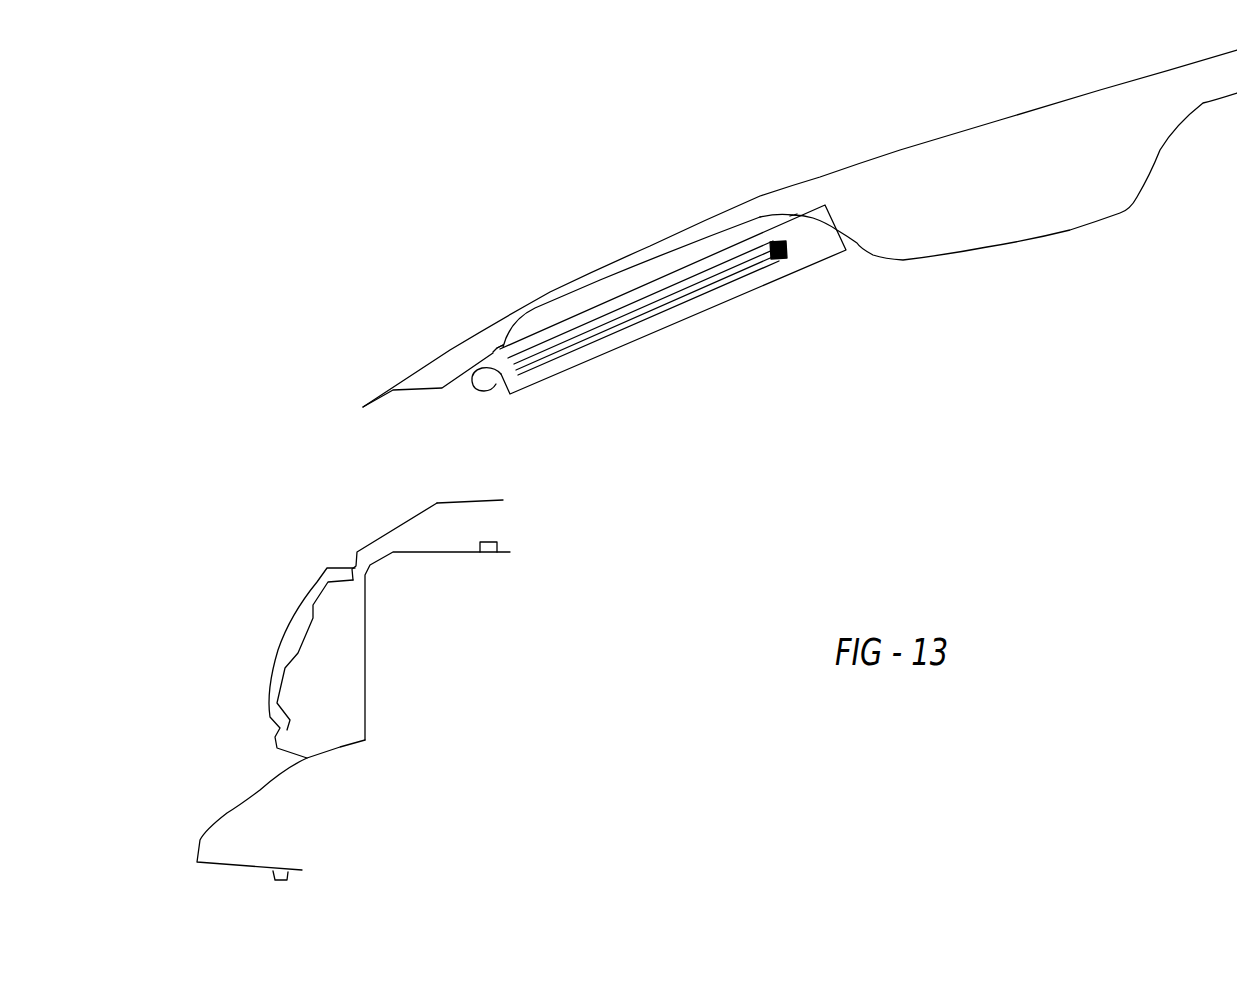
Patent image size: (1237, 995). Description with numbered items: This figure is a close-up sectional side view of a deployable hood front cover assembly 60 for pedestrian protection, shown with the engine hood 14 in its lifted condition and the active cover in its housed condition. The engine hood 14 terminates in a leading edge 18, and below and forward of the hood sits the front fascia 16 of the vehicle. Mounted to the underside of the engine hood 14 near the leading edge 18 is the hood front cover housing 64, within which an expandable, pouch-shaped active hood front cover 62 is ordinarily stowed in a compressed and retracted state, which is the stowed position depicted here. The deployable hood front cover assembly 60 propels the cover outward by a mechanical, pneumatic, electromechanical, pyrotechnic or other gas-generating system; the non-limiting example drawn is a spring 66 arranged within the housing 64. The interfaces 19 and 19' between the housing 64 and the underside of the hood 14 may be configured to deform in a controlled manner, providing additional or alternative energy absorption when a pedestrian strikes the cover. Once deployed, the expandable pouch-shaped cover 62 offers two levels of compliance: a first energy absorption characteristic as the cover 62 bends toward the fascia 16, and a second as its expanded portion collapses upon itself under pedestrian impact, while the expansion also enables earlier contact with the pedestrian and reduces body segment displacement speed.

The engine hood 14 is at (930, 140).
The front fascia 16 is at (280, 642).
The leading edge 18 is at (450, 349).
The interface 19 is at (485, 276).
The interface 19' is at (759, 159).
The deployable hood front cover assembly 60 is at (697, 343).
The expandable pouch-shaped active hood front cover 62 is at (488, 393).
The hood front cover housing 64 is at (670, 283).
The spring 66 is at (786, 259).